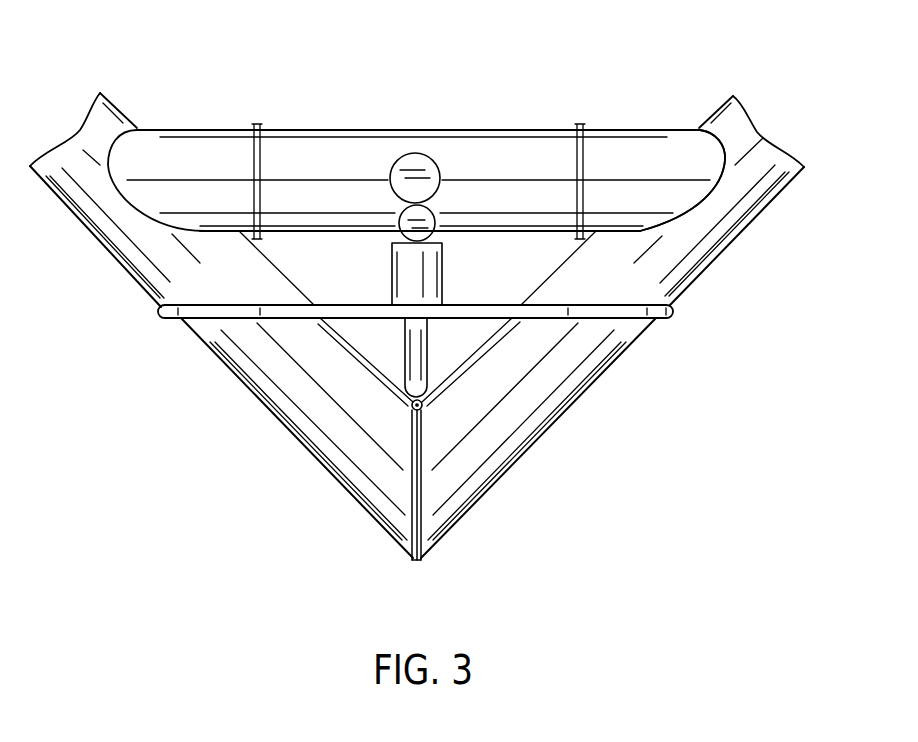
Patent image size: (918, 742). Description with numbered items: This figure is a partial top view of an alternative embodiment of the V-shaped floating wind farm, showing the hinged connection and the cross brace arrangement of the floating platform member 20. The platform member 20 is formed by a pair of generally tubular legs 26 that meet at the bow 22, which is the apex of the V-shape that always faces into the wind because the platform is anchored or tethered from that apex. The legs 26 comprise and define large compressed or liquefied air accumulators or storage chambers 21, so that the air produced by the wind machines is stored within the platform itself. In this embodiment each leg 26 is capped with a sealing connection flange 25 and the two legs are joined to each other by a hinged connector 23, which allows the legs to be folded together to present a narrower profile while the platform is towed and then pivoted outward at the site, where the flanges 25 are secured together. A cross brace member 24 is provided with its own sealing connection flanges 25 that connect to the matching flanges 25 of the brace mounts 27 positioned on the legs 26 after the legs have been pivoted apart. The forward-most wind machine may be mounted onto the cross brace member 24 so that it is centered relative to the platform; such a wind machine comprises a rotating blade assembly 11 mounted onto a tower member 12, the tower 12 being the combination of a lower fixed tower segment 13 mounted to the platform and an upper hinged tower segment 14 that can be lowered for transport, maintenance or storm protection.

The rotating blade assembly 11 is at (680, 314).
The tower member 12 is at (372, 140).
The lower fixed tower segment 13 is at (438, 168).
The upper hinged tower segment 14 is at (437, 215).
The V-shaped floating platform member 20 is at (183, 153).
The storage chambers 21 is at (97, 100).
The bow 22 is at (380, 565).
The hinged connector 23 is at (424, 403).
The cross brace member 24 is at (542, 152).
The sealing connection flange 25 is at (256, 147).
The legs 26 is at (235, 351).
The brace mounts 27 is at (662, 162).